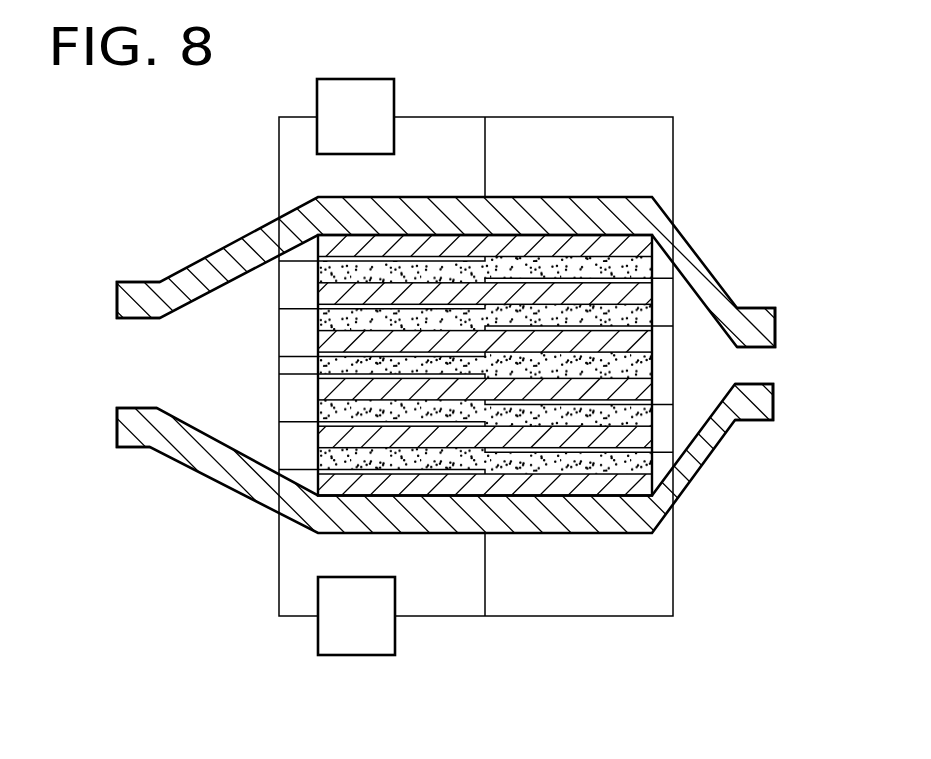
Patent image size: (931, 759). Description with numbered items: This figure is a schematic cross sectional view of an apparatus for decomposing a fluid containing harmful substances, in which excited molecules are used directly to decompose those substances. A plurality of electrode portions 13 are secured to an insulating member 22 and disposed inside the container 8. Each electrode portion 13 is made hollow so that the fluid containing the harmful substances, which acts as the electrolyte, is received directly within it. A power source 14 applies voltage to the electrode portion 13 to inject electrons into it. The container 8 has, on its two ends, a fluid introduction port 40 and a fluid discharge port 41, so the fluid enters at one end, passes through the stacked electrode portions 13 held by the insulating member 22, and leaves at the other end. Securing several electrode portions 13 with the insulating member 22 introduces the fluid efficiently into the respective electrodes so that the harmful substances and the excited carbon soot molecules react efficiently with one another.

The container 8 is at (705, 292).
The electrode portion 13 is at (642, 243).
The power source 14 is at (381, 93).
The insulating member 22 is at (641, 270).
The fluid introduction port 40 is at (162, 362).
The fluid discharge port 41 is at (760, 363).